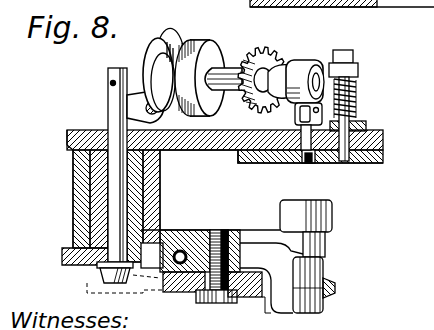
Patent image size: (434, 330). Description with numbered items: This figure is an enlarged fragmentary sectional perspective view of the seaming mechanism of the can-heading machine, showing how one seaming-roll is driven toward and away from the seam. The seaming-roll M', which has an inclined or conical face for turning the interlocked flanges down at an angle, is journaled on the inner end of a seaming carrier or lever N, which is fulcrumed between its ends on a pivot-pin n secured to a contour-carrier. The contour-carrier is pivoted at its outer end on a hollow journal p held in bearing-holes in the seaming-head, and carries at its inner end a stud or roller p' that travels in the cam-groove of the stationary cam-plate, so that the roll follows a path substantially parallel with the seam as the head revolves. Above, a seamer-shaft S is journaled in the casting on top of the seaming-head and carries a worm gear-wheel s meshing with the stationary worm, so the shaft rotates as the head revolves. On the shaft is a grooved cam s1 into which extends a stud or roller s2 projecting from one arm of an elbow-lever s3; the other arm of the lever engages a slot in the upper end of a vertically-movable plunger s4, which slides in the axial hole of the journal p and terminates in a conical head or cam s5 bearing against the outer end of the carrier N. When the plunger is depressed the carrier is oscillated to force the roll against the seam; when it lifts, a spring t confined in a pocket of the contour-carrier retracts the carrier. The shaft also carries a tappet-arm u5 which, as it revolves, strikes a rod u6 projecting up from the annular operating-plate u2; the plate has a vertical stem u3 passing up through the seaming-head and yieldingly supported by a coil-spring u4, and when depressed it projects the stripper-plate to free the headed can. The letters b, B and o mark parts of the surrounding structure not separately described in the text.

The grooved cam s1 is at (156, 42).
The stud or roller s2 is at (183, 60).
The elbow-lever s3 is at (153, 70).
The vertically-movable plunger s4 is at (112, 160).
The conical head or cam s5 is at (100, 275).
The seamer-shaft S is at (221, 73).
The worm gear-wheel s is at (268, 50).
The tappet-arm u5 is at (296, 77).
The coil-spring u4 is at (357, 101).
The vertical rod or stem u3 is at (384, 144).
The annular operating-plate u2 is at (384, 162).
The rod u6 is at (303, 163).
The hollow journal p is at (100, 199).
The housing flange b is at (62, 257).
The chamber B is at (208, 151).
The spring t is at (177, 243).
The pivot-pin n is at (218, 232).
The passage o is at (258, 238).
The stud or roller p' is at (321, 227).
The seaming-roll M' is at (329, 285).
The seaming carrier or lever N is at (272, 291).